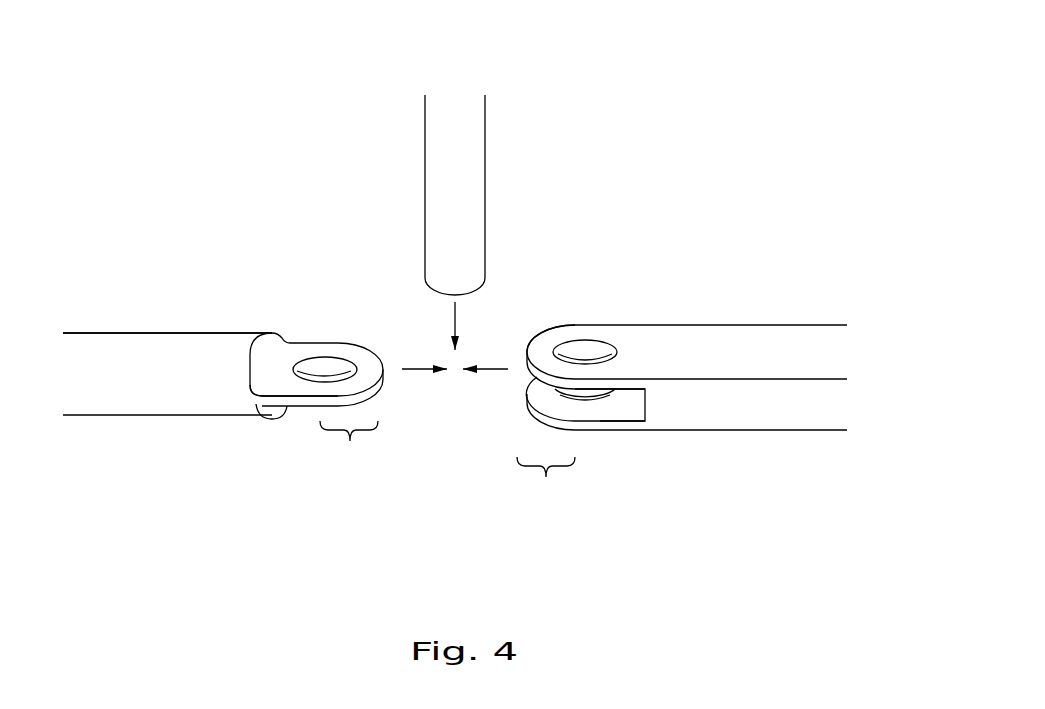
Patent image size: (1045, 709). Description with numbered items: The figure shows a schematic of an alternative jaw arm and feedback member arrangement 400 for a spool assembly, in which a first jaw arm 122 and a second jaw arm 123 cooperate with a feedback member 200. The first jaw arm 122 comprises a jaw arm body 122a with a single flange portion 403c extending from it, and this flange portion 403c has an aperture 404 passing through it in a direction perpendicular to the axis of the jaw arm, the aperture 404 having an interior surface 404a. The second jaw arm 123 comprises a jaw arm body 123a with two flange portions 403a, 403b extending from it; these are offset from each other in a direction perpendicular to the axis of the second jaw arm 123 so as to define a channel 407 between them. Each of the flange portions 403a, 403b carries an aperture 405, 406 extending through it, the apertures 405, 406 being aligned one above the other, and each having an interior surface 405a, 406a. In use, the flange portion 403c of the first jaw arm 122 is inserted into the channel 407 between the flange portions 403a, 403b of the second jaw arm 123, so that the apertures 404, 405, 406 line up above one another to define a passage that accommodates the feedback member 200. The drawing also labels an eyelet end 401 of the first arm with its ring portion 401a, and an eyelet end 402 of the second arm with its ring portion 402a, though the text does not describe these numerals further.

The jaw arm and feedback member arrangement 400 is at (278, 200).
The feedback member 200 is at (492, 132).
The first jaw arm 122 is at (181, 420).
The jaw arm body 122a is at (182, 330).
The first eyelet plate 401 is at (297, 340).
The ring portion of first eyelet plate 401a is at (350, 448).
The flange portion 403c is at (280, 372).
The aperture 404 is at (325, 378).
The interior surface 404a is at (340, 369).
The second eyelet plate 402 is at (642, 322).
The ring portion of second eyelet plate 402a is at (545, 484).
The flange portion 403a is at (547, 333).
The flange portion 403b is at (537, 413).
The aperture 405 is at (595, 343).
The interior surface 405a is at (573, 337).
The aperture 406 is at (587, 393).
The interior surface 406a is at (548, 392).
The channel 407 is at (632, 392).
The second jaw arm 123 is at (732, 437).
The jaw arm body 123a is at (777, 322).